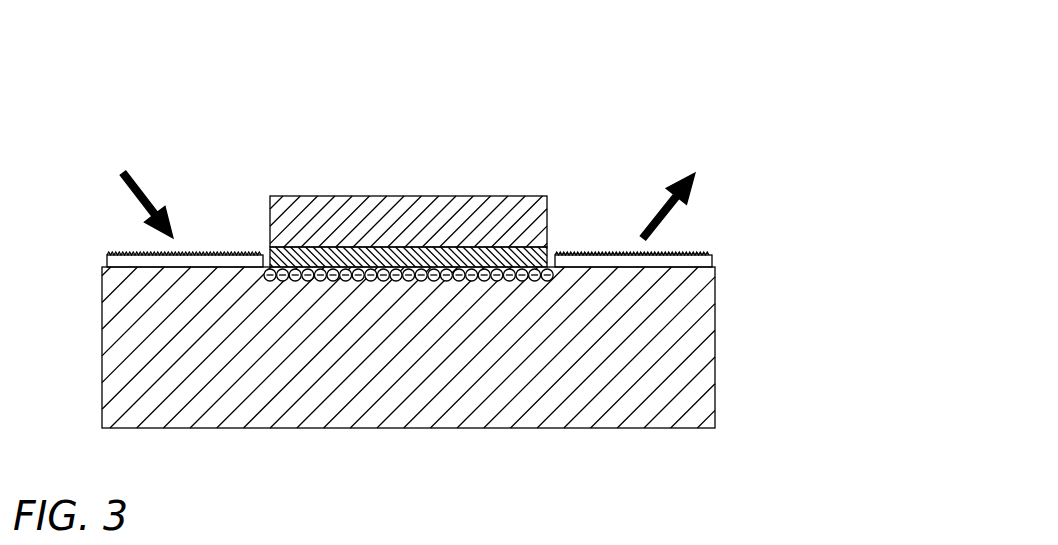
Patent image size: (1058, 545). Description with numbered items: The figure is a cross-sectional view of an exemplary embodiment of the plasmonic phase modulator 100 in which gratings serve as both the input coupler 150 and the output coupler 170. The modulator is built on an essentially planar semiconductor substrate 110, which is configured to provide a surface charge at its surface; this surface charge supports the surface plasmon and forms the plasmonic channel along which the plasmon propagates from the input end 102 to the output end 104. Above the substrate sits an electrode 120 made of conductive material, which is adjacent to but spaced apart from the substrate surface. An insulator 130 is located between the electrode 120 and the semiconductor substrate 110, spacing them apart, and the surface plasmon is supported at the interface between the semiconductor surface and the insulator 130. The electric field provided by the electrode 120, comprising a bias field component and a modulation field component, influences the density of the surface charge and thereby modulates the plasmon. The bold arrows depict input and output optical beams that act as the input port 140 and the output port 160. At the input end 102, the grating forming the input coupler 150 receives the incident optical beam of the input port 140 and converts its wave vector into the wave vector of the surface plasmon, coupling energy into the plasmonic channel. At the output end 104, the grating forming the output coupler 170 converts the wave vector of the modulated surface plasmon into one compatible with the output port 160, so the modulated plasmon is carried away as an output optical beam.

The plasmonic phase modulator 100 is at (637, 64).
The input end 102 is at (181, 163).
The output end 104 is at (639, 163).
The semiconductor substrate 110 is at (715, 348).
The electrode 120 is at (410, 197).
The insulator 130 is at (549, 252).
The input port 140 is at (131, 184).
The input coupler 150 is at (127, 257).
The output port 160 is at (696, 181).
The output coupler 170 is at (695, 257).